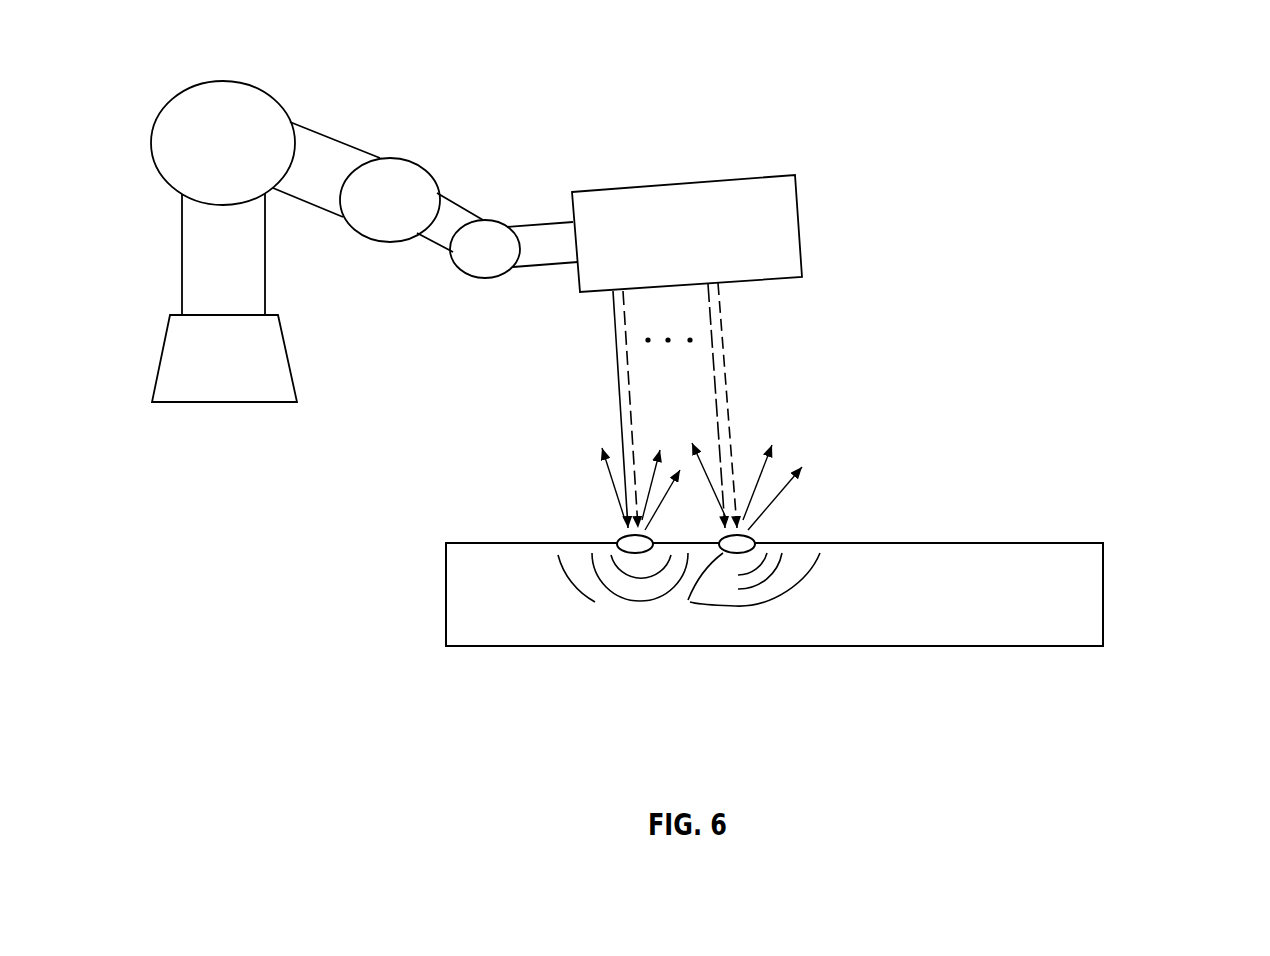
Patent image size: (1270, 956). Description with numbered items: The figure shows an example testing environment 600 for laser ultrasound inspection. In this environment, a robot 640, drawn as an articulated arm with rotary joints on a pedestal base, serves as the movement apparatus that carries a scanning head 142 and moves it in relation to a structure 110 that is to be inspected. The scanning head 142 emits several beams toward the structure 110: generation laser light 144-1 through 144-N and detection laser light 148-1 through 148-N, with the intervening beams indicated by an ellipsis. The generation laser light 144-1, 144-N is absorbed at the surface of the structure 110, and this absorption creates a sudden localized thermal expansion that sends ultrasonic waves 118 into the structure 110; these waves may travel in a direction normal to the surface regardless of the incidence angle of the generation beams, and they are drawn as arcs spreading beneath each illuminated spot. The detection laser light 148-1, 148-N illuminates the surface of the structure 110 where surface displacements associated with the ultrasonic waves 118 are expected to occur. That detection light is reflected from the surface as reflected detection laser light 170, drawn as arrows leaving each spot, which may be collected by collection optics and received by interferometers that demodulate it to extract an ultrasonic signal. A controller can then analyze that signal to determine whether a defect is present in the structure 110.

The testing environment 600 is at (745, 70).
The robot 640 is at (330, 157).
The scanning head 142 is at (798, 225).
The generation laser light 144-1 is at (618, 358).
The detection laser light 148-1 is at (620, 418).
The detection laser light 148-N is at (710, 320).
The generation laser light 144-N is at (730, 397).
The reflected detection laser light 170 is at (777, 500).
The structure 110 is at (1088, 607).
The ultrasonic waves 118 is at (732, 606).